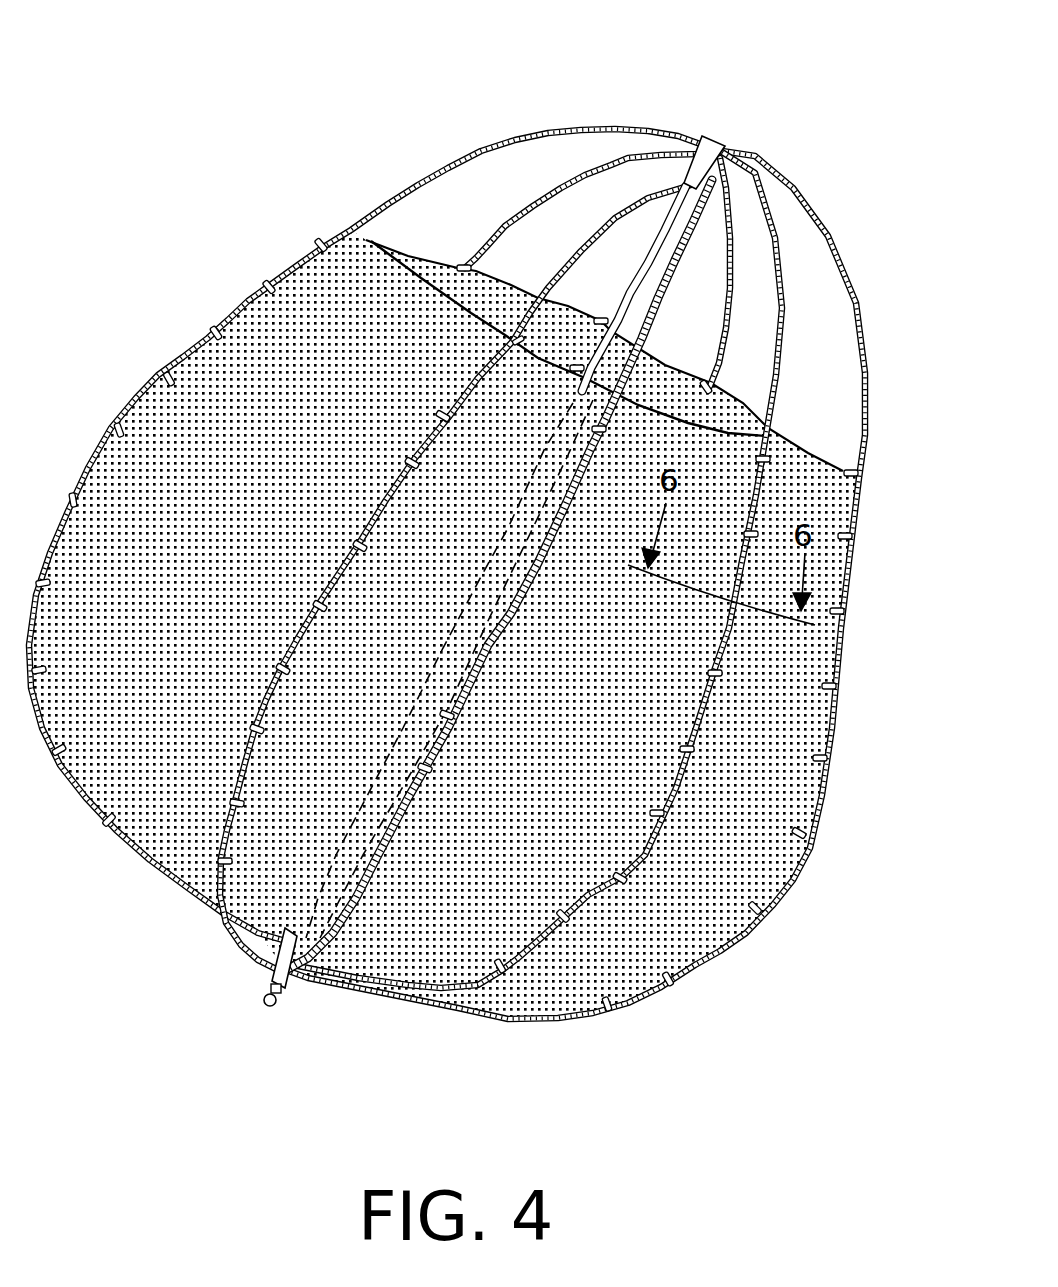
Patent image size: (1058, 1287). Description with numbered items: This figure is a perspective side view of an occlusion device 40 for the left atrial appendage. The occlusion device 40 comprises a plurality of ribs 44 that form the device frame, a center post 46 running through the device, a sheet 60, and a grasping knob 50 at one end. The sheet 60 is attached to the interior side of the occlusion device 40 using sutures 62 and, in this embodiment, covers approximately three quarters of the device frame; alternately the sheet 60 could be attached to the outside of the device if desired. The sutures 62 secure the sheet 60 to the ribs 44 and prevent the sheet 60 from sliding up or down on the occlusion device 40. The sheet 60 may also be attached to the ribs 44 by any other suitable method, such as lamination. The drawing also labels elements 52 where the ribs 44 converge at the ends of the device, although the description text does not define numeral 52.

The occlusion device 40 is at (482, 574).
The ribs 44 is at (402, 451).
The center post 46 is at (620, 303).
The grasping knob 50 is at (256, 993).
The hub 52 is at (709, 133).
The sheet 60 is at (576, 758).
The sutures 62 is at (720, 652).